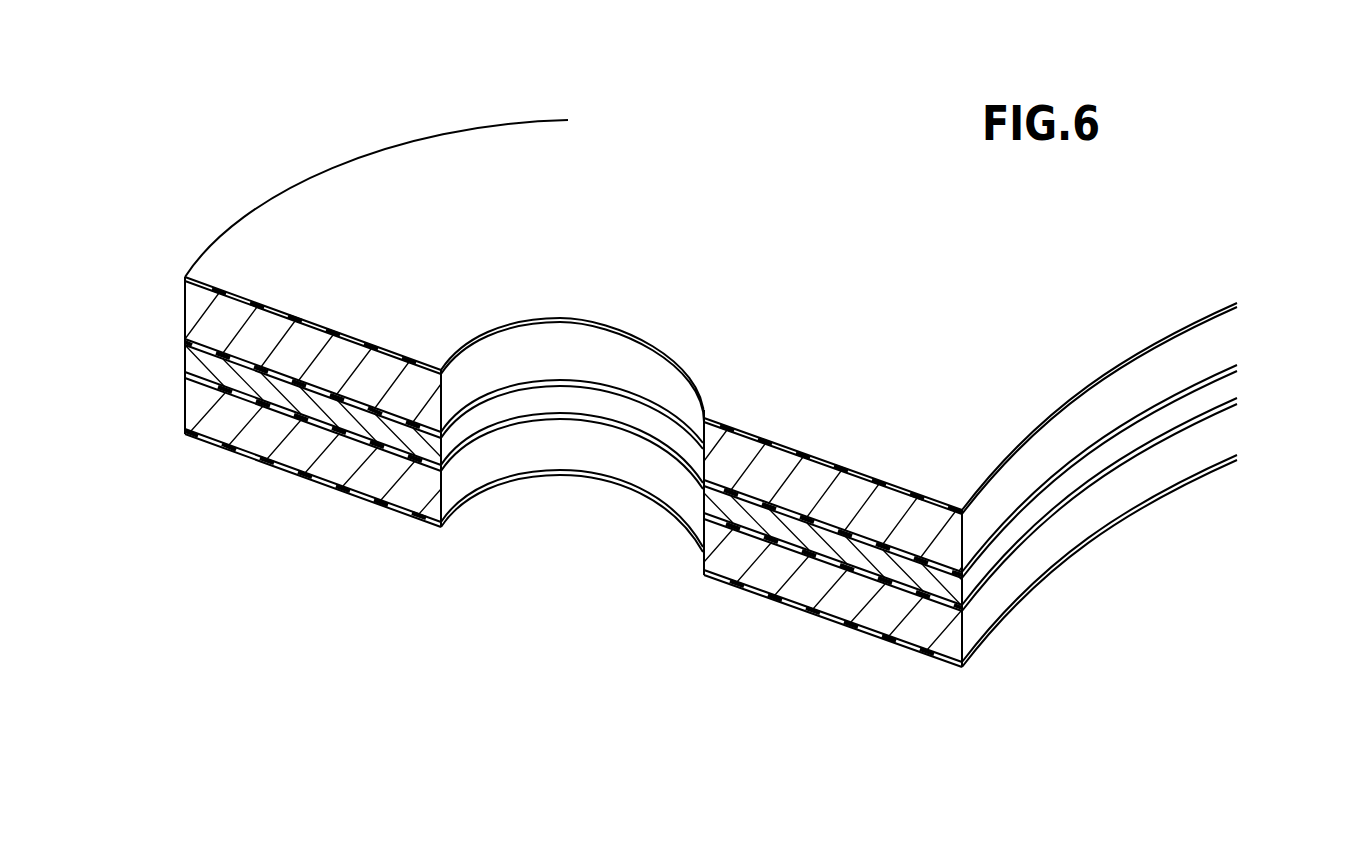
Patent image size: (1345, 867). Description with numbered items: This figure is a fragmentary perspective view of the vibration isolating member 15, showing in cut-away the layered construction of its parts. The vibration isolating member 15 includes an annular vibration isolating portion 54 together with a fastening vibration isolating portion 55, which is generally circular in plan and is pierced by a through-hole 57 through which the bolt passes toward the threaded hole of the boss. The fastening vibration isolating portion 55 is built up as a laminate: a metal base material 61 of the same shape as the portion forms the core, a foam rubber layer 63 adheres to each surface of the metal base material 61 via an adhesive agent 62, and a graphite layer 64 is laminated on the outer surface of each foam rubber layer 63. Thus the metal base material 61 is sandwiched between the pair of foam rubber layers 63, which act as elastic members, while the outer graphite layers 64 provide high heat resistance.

The vibration isolating member 15 is at (716, 169).
The annular vibration isolating portion 54 is at (1080, 367).
The fastening vibration isolating portion 55 is at (335, 185).
The through-hole 57 is at (633, 358).
The metal base material 61 is at (377, 427).
The adhesive agent 62 is at (283, 405).
The foam rubber layer 63 is at (783, 568).
The graphite layer 64 is at (847, 623).